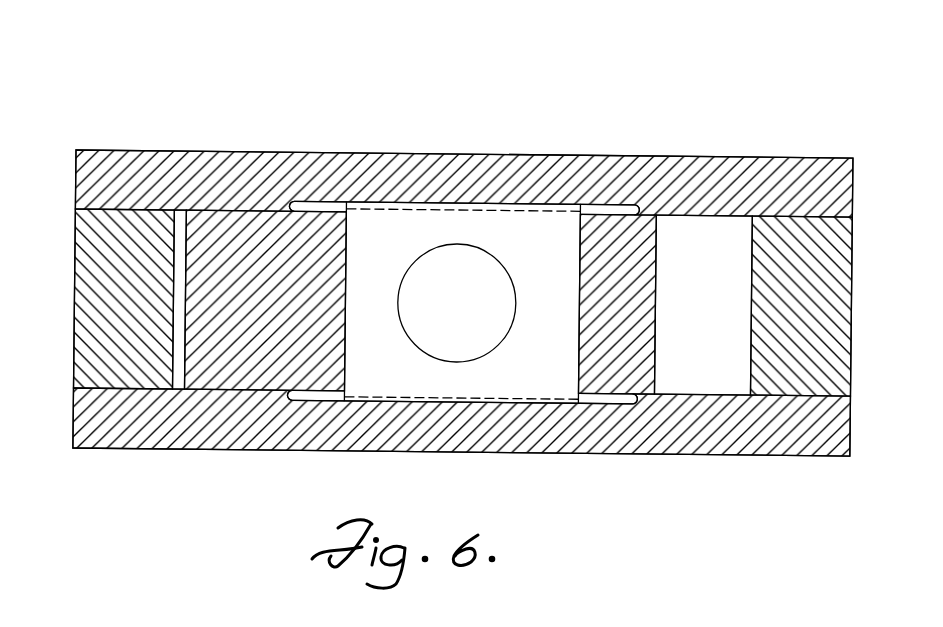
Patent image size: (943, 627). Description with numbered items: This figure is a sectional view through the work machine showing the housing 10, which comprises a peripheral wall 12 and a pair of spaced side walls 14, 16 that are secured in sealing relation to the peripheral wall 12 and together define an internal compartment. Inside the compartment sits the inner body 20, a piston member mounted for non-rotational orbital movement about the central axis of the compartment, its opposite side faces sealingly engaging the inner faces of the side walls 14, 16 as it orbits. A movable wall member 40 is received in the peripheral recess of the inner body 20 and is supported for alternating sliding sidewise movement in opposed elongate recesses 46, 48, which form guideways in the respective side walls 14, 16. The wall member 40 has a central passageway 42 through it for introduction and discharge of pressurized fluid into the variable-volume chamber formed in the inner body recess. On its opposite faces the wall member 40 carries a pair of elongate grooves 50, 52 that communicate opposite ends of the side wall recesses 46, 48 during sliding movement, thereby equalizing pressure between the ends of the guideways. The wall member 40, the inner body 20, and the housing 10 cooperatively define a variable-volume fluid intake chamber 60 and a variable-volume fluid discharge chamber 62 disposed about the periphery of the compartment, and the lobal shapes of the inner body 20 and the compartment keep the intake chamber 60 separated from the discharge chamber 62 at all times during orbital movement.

The housing 10 is at (228, 151).
The peripheral wall 12 is at (105, 315).
The side wall 14 is at (415, 153).
The side wall 16 is at (224, 447).
The inner body 20 is at (327, 249).
The movable wall member 40 is at (470, 236).
The central passageway 42 is at (518, 306).
The elongate recess 46 is at (316, 202).
The elongate recess 48 is at (318, 397).
The elongate groove 50 is at (503, 207).
The elongate groove 52 is at (373, 398).
The variable-volume fluid intake chamber 60 is at (178, 372).
The variable-volume fluid discharge chamber 62 is at (712, 330).